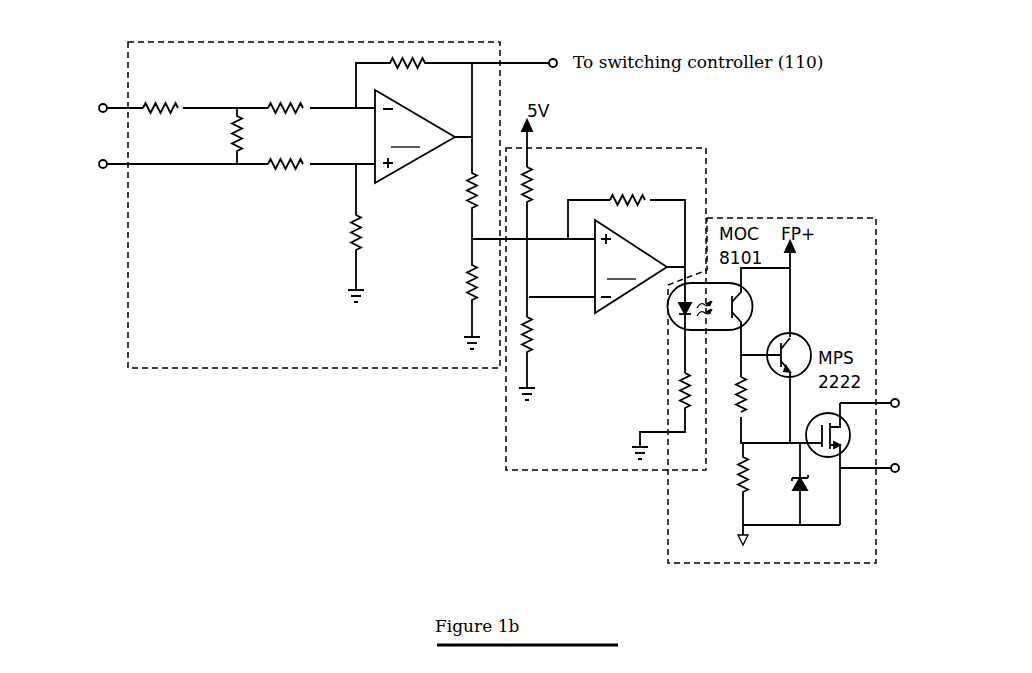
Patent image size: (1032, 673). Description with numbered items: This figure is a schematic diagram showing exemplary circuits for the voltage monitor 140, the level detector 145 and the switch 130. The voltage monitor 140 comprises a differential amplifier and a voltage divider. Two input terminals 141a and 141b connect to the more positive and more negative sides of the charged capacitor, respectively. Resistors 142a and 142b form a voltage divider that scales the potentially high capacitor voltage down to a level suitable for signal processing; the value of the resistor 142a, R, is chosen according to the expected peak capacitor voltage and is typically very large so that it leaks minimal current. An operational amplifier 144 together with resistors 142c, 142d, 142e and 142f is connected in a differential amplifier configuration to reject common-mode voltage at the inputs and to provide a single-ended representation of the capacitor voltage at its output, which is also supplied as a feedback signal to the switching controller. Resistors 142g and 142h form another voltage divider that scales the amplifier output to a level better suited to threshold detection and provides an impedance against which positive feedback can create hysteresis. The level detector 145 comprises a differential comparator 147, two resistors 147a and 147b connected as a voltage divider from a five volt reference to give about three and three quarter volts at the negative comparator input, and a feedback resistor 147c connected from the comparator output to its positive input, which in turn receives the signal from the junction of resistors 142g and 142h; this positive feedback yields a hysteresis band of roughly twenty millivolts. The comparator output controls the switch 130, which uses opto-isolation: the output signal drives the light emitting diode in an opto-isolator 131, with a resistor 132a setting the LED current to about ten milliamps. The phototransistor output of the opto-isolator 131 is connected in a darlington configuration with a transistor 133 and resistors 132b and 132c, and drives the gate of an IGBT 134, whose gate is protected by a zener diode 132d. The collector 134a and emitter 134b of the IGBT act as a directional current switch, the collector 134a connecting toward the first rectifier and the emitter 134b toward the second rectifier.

The voltage monitor 140 is at (236, 42).
The input terminal 141a is at (99, 108).
The input terminal 141b is at (99, 164).
The resistor 142a is at (178, 89).
The resistor 142b is at (232, 158).
The resistor 142c is at (290, 102).
The resistor 142d is at (288, 170).
The resistor 142e is at (410, 60).
The resistor 142f is at (348, 238).
The resistor 142g is at (466, 192).
The resistor 142h is at (466, 278).
The operational amplifier 144 is at (415, 136).
The level detector 145 is at (614, 148).
The differential comparator 147 is at (631, 266).
The resistor 147a is at (540, 184).
The resistor 147b is at (538, 352).
The feedback resistor 147c is at (628, 197).
The switch 130 is at (758, 218).
The opto-isolator 131 is at (718, 334).
The resistor 132a is at (681, 376).
The resistor 132b is at (739, 396).
The resistor 132c is at (738, 494).
The zener diode 132d is at (795, 486).
The transistor 133 is at (806, 340).
The IGBT 134 is at (851, 436).
The collector 134a is at (896, 399).
The emitter 134b is at (897, 473).